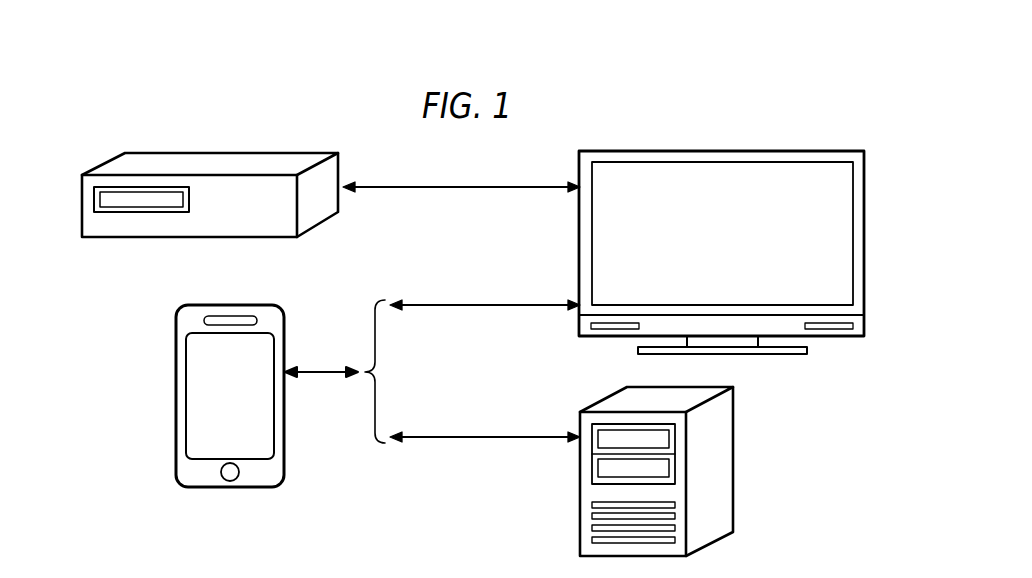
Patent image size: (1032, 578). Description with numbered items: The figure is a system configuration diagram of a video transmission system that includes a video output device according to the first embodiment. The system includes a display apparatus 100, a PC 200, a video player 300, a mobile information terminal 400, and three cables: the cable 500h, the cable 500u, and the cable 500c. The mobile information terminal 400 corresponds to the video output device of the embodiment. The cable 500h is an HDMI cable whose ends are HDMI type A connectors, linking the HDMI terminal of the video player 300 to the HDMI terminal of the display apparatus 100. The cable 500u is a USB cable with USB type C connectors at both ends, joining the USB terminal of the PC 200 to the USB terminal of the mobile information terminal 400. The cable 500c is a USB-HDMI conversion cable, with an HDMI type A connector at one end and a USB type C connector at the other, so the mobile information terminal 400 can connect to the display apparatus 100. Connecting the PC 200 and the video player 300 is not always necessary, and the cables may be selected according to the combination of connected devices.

The display apparatus 100 is at (783, 357).
The PC (Personal Computer) 200 is at (737, 495).
The video player 300 is at (320, 225).
The mobile information terminal 400 is at (175, 377).
The cable 500h is at (463, 190).
The cable 500c is at (466, 308).
The cable 500u is at (466, 440).